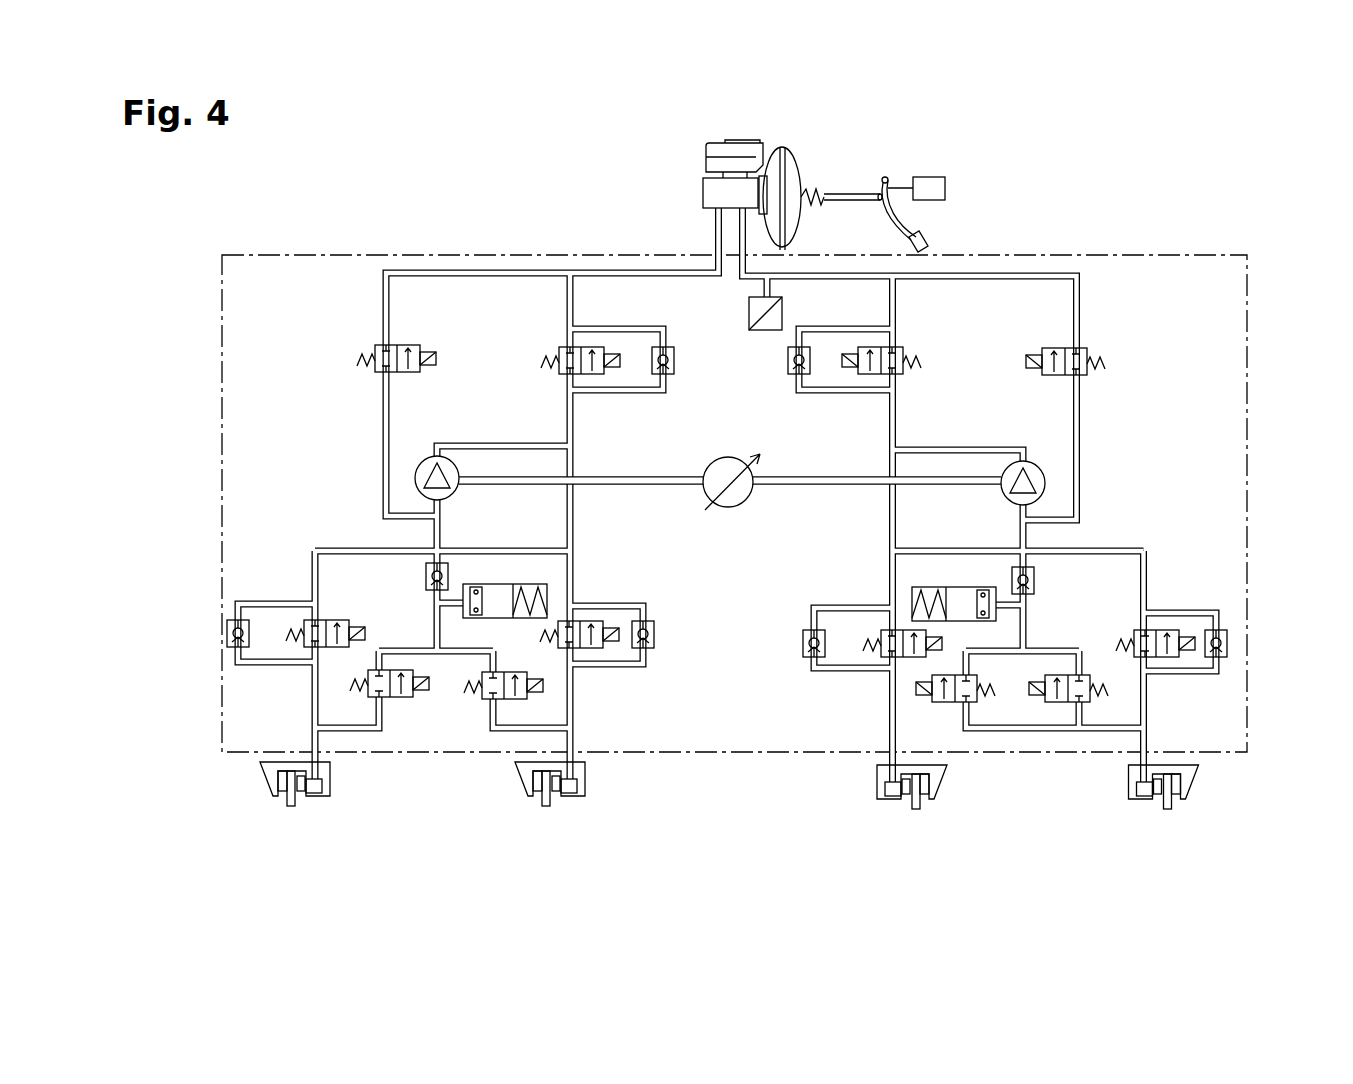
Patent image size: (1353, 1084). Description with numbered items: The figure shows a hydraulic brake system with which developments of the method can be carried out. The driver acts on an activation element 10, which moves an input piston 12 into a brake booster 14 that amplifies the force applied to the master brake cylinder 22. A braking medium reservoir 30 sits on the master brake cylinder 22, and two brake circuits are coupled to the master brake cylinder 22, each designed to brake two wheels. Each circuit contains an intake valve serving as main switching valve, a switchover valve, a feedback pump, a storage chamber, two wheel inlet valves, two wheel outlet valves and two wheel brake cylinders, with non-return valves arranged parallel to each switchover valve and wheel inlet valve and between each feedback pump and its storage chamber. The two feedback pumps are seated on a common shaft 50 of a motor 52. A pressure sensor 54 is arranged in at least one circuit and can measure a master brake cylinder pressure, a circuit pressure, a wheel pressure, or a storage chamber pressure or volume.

The activation element 10 is at (890, 223).
The input piston 12 is at (847, 203).
The brake booster 14 is at (793, 175).
The master brake cylinder 22 is at (710, 190).
The braking medium reservoir 30 is at (752, 152).
The shaft 50 is at (822, 486).
The motor 52 is at (730, 507).
The pressure sensor 54 is at (783, 312).